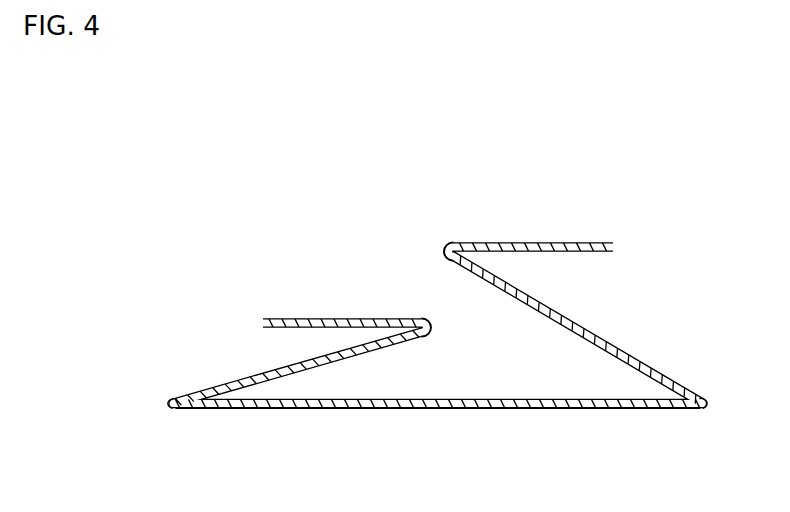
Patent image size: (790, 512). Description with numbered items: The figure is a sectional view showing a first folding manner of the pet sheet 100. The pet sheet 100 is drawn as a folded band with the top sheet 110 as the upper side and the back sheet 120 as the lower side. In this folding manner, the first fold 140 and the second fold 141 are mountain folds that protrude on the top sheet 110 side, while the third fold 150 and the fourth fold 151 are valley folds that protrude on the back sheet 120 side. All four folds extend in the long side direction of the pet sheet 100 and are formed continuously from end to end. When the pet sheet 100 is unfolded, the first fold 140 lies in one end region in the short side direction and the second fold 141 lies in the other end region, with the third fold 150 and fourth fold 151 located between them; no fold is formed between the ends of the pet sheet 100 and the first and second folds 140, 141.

The pet sheet 100 is at (666, 201).
The top sheet 110 is at (498, 400).
The back sheet 120 is at (445, 408).
The first fold 140 is at (455, 230).
The second fold 141 is at (421, 305).
The third fold 150 is at (708, 418).
The fourth fold 151 is at (177, 425).